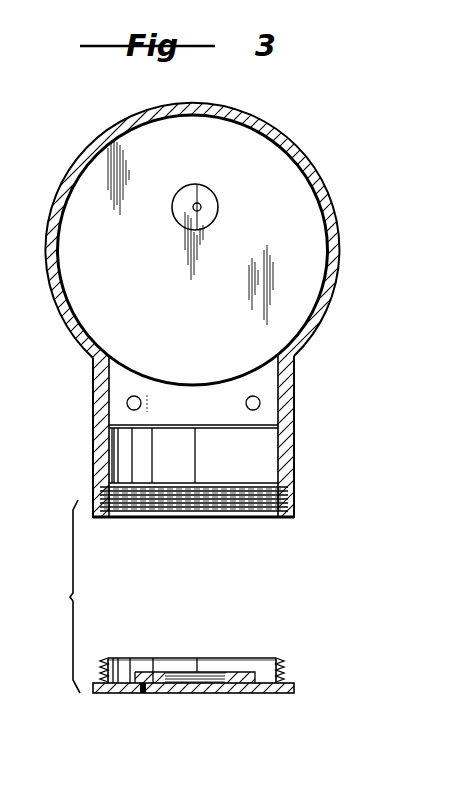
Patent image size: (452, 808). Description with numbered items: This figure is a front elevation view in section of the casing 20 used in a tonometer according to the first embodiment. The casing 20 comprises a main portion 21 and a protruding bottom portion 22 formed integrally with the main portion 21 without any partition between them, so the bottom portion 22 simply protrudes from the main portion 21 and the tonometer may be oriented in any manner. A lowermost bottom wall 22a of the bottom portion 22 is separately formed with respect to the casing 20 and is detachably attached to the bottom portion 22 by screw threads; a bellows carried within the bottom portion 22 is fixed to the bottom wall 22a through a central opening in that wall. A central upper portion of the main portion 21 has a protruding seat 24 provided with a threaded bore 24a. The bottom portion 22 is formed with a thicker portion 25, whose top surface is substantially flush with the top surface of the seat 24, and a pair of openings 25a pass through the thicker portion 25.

The casing 20 is at (226, 280).
The main portion 21 is at (340, 234).
The protruding bottom portion 22 is at (283, 465).
The bottom wall 22a is at (263, 693).
The protruding seat 24 is at (226, 203).
The threaded bore 24a is at (200, 205).
The thicker portion 25 is at (268, 381).
The openings 25a is at (260, 403).